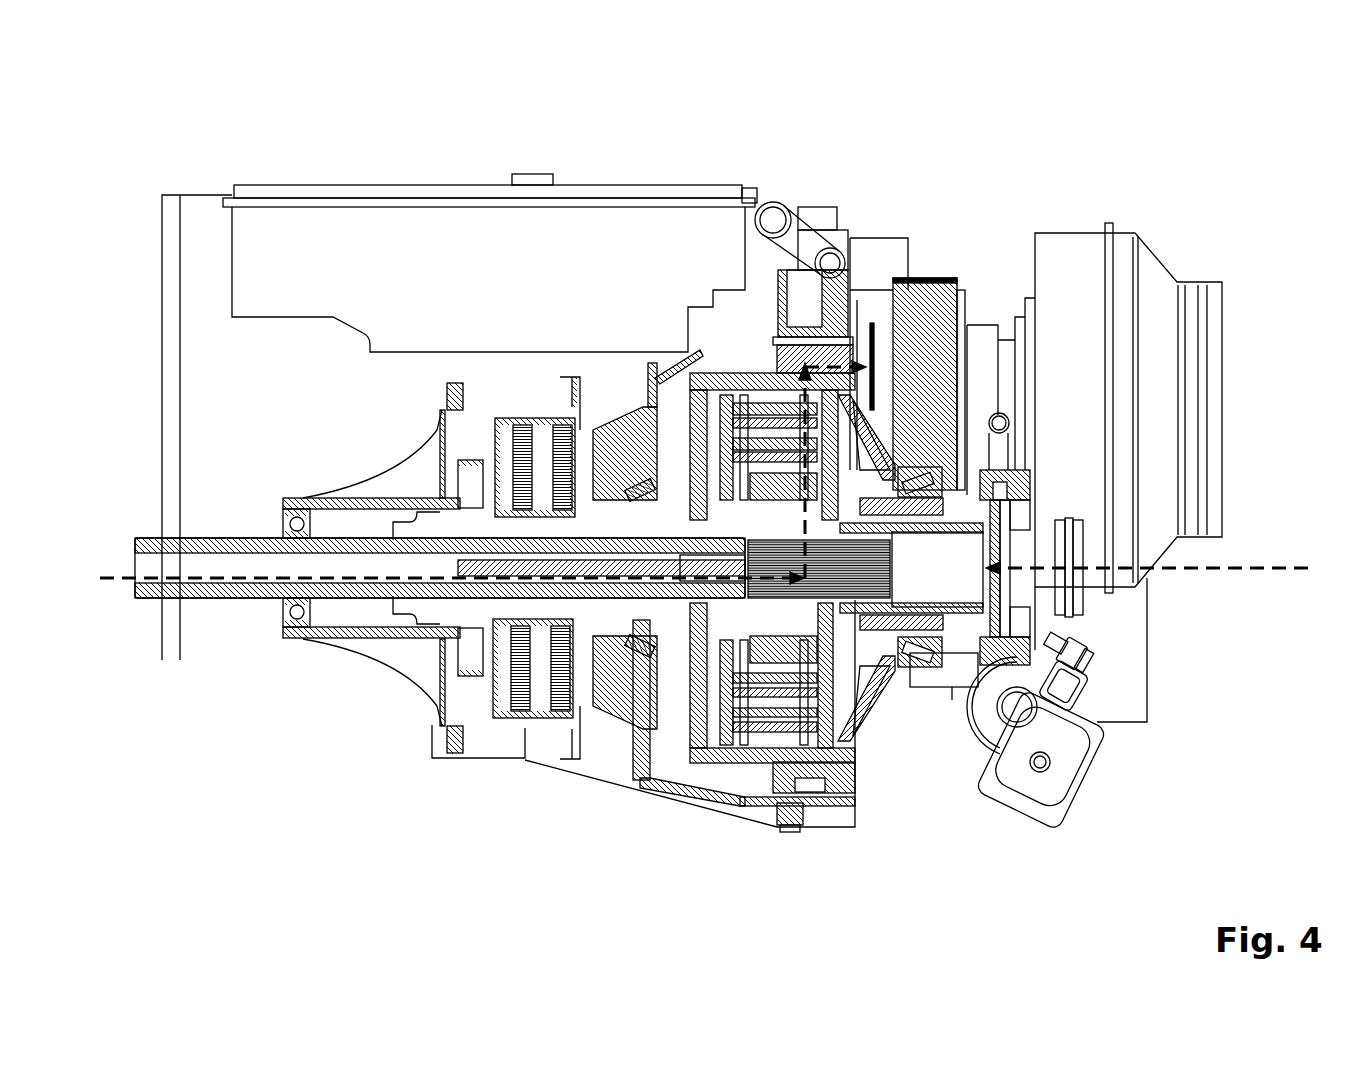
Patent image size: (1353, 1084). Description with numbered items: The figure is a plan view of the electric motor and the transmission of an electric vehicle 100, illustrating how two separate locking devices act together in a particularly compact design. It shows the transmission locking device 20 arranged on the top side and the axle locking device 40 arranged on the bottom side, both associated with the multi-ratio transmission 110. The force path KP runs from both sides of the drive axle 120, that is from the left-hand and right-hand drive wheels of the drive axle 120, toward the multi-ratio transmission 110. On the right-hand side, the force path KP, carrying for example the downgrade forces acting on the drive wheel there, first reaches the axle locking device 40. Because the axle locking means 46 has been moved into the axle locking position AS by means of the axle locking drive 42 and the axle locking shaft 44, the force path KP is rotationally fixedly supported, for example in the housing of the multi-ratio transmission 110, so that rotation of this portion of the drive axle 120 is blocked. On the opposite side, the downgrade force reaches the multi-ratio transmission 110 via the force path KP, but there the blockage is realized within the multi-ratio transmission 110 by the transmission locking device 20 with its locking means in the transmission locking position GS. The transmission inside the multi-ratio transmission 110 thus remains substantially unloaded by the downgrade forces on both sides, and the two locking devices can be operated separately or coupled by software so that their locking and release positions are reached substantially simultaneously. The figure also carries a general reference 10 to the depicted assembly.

The electric vehicle 100 is at (392, 117).
The transmission locking device 20 is at (811, 167).
The clutch device / transmission 10 is at (966, 870).
The transmission locking position GS is at (873, 253).
The multi-ratio transmission 110 is at (930, 298).
The force path KP is at (105, 580).
The drive axle 120 is at (258, 598).
The axle locking shaft 44 is at (1055, 628).
The axle locking means 46 is at (980, 645).
The axle locking position AS is at (950, 710).
The axle locking device 40 is at (1083, 834).
The axle locking drive 42 is at (1060, 778).